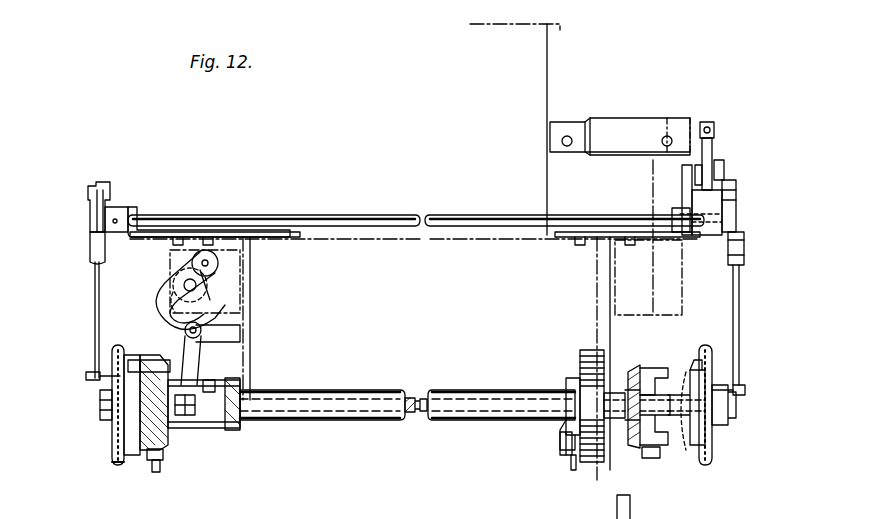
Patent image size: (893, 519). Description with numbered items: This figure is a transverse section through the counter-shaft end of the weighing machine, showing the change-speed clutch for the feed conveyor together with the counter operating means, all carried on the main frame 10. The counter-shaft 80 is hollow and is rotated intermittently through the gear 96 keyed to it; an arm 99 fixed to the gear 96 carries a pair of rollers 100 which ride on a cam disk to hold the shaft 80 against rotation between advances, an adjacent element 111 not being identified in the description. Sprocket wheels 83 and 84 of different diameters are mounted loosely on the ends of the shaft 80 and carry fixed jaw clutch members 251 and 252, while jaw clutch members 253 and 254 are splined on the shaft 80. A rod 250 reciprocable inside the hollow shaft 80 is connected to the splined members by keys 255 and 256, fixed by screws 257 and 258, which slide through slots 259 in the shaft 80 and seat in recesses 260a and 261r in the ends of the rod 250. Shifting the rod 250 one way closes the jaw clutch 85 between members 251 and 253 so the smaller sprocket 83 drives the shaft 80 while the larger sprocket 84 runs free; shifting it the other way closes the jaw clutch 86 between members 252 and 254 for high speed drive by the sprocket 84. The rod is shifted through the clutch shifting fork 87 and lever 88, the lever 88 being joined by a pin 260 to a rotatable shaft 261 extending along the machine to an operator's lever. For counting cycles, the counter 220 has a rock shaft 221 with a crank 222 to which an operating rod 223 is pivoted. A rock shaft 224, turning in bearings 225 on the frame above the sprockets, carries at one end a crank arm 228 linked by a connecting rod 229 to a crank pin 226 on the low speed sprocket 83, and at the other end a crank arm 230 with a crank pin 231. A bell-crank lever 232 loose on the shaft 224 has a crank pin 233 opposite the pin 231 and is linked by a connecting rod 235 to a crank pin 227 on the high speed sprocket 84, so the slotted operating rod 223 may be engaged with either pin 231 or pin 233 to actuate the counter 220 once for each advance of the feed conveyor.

The frame 10 is at (255, 262).
The counter-shaft 80 is at (385, 420).
The sprocket wheel 83 is at (112, 432).
The sprocket wheel 84 is at (712, 462).
The jaw clutch 85 is at (130, 455).
The jaw clutch 86 is at (660, 445).
The clutch shifting fork 87 is at (196, 358).
The lever 88 is at (160, 288).
The gear 96 is at (580, 352).
The arm 99 is at (566, 380).
The rollers 100 is at (560, 450).
The tab 111 is at (571, 468).
The counter 220 is at (603, 118).
The rock shaft 221 is at (714, 130).
The crank 222 is at (712, 155).
The operating rod 223 is at (695, 175).
The rock shaft 224 is at (348, 222).
The bearings 225 is at (137, 212).
The crank pin 226 is at (86, 376).
The crank pin 227 is at (745, 392).
The crank arm 228 is at (110, 207).
The connecting rod 229 is at (95, 305).
The crank arm 230 is at (682, 200).
The crank pin 231 is at (709, 212).
The bell-crank lever 232 is at (736, 185).
The crank pin 233 is at (724, 165).
The connecting rod 235 is at (739, 300).
The rod 250 is at (418, 398).
The jaw clutch member 251 is at (132, 360).
The jaw clutch member 252 is at (698, 362).
The jaw clutch member 253 is at (163, 445).
The jaw clutch member 254 is at (655, 370).
The key 255 is at (195, 420).
The key 256 is at (632, 445).
The screw 257 is at (156, 472).
The screw 258 is at (651, 458).
The slots 259 is at (235, 425).
The pin 260 is at (193, 258).
The recess 260a is at (219, 377).
The rotatable shaft 261 is at (196, 290).
The recess 261r is at (628, 372).